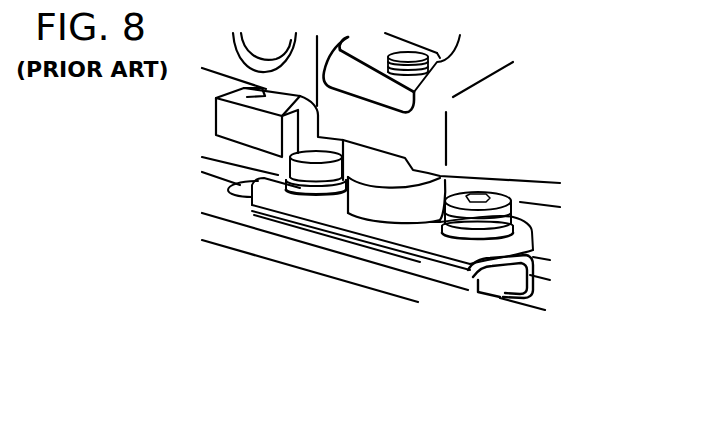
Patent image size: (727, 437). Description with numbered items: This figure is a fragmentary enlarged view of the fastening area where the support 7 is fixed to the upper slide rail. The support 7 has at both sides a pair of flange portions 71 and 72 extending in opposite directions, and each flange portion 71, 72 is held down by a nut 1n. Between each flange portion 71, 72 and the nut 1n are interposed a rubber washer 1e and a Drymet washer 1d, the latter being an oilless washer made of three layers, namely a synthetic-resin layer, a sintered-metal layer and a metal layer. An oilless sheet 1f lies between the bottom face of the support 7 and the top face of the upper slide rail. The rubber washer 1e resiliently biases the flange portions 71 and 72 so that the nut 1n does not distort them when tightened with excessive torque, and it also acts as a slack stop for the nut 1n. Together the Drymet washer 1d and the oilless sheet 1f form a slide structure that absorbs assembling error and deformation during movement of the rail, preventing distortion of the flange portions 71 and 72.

The support 7 is at (247, 203).
The flange portion 72 is at (290, 192).
The flange portion 71 is at (425, 226).
The Drymet washer 1d is at (527, 253).
The rubber washer 1e is at (517, 227).
The oilless sheet 1f is at (468, 264).
The nut 1n is at (513, 212).